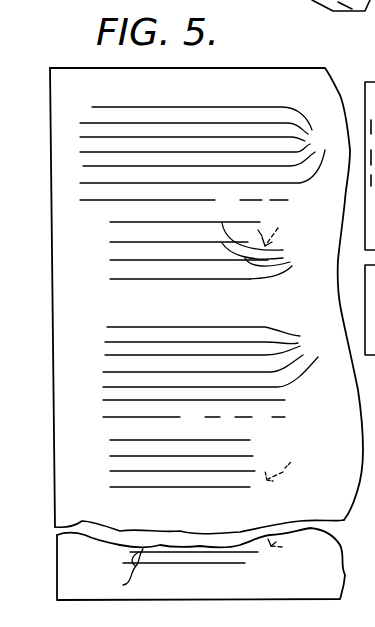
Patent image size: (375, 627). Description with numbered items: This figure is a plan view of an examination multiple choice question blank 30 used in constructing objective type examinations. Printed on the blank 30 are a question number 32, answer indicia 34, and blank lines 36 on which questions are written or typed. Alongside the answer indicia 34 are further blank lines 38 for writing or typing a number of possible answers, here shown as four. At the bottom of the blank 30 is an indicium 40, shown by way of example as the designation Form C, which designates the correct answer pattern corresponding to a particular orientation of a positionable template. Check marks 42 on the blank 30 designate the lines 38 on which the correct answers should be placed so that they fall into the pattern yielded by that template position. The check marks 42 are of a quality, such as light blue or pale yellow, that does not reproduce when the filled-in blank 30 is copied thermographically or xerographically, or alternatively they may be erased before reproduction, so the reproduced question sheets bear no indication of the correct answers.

The examination multiple choice question blank 30 is at (323, 72).
The question number 32 is at (72, 90).
The answer indicia 34 is at (84, 278).
The blank lines for writing or typing in questions 36 is at (208, 262).
The blank lines for possible answers 38 is at (207, 410).
The correct answer pattern indicium 40 is at (248, 591).
The check marks 42 is at (278, 228).